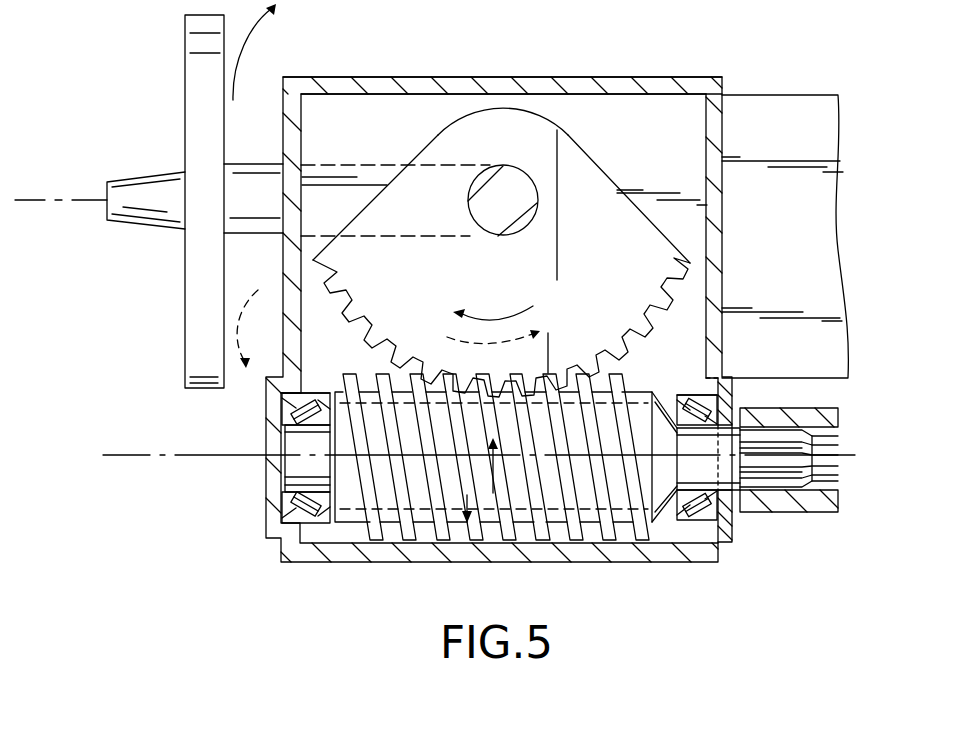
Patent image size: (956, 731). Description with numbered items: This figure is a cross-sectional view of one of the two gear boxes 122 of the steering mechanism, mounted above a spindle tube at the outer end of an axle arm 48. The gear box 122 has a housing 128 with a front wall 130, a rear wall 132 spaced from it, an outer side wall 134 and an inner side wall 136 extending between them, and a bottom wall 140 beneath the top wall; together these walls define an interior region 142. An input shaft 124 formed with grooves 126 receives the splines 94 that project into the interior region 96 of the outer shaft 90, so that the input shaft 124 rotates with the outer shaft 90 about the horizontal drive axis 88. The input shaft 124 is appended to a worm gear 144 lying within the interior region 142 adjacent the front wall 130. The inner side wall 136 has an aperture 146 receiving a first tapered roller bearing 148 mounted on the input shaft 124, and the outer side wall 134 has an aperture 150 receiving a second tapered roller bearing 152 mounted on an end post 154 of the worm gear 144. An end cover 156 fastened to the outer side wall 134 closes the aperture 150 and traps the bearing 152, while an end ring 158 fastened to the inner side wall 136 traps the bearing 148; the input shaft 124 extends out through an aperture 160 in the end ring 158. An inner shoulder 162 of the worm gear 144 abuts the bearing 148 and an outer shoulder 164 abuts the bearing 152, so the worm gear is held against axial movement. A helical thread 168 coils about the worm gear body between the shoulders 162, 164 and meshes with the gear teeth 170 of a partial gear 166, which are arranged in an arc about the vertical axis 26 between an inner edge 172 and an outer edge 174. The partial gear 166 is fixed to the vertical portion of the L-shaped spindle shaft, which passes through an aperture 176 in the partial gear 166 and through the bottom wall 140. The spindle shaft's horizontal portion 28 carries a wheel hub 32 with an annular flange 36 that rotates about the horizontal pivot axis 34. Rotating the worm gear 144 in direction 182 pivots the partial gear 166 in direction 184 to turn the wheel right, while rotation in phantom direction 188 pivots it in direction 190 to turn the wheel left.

The gear box 122 is at (658, 27).
The housing 128 is at (507, 62).
The front wall 130 is at (492, 553).
The rear wall 132 is at (430, 84).
The outer side wall 134 is at (294, 118).
The inner side wall 136 is at (717, 126).
The bottom wall 140 is at (673, 118).
The interior region 142 is at (612, 120).
The worm gear 144 is at (632, 487).
The aperture 146 is at (711, 385).
The first tapered roller bearing 148 is at (692, 389).
The aperture 150 is at (290, 388).
The second tapered roller bearing 152 is at (313, 384).
The end post 154 is at (298, 462).
The end cover 156 is at (272, 418).
The end ring 158 is at (733, 527).
The aperture 160 is at (732, 400).
The inner shoulder 162 is at (672, 500).
The outer shoulder 164 is at (350, 493).
The partial gear 166 is at (451, 149).
The helical thread 168 is at (595, 500).
The gear teeth 170 is at (643, 339).
The inner edge 172 is at (614, 184).
The outer edge 174 is at (362, 203).
The aperture 176 is at (533, 178).
The direction of rotation 182 is at (462, 487).
The direction of pivoting 184 is at (248, 50).
The direction of rotation 188 is at (527, 520).
The direction of pivoting 190 is at (495, 362).
The vertical axis 26 is at (512, 202).
The horizontal portion 28 is at (262, 215).
The wheel hub 32 is at (137, 145).
The pivot axis 34 is at (24, 198).
The annular flange 36 is at (205, 34).
The axle arm 48 is at (824, 122).
The horizontal drive axis 88 is at (118, 456).
The outer shaft 90 is at (800, 412).
The splines 94 is at (838, 470).
The interior region 96 is at (832, 443).
The input shaft 124 is at (712, 470).
The grooves 126 is at (812, 470).